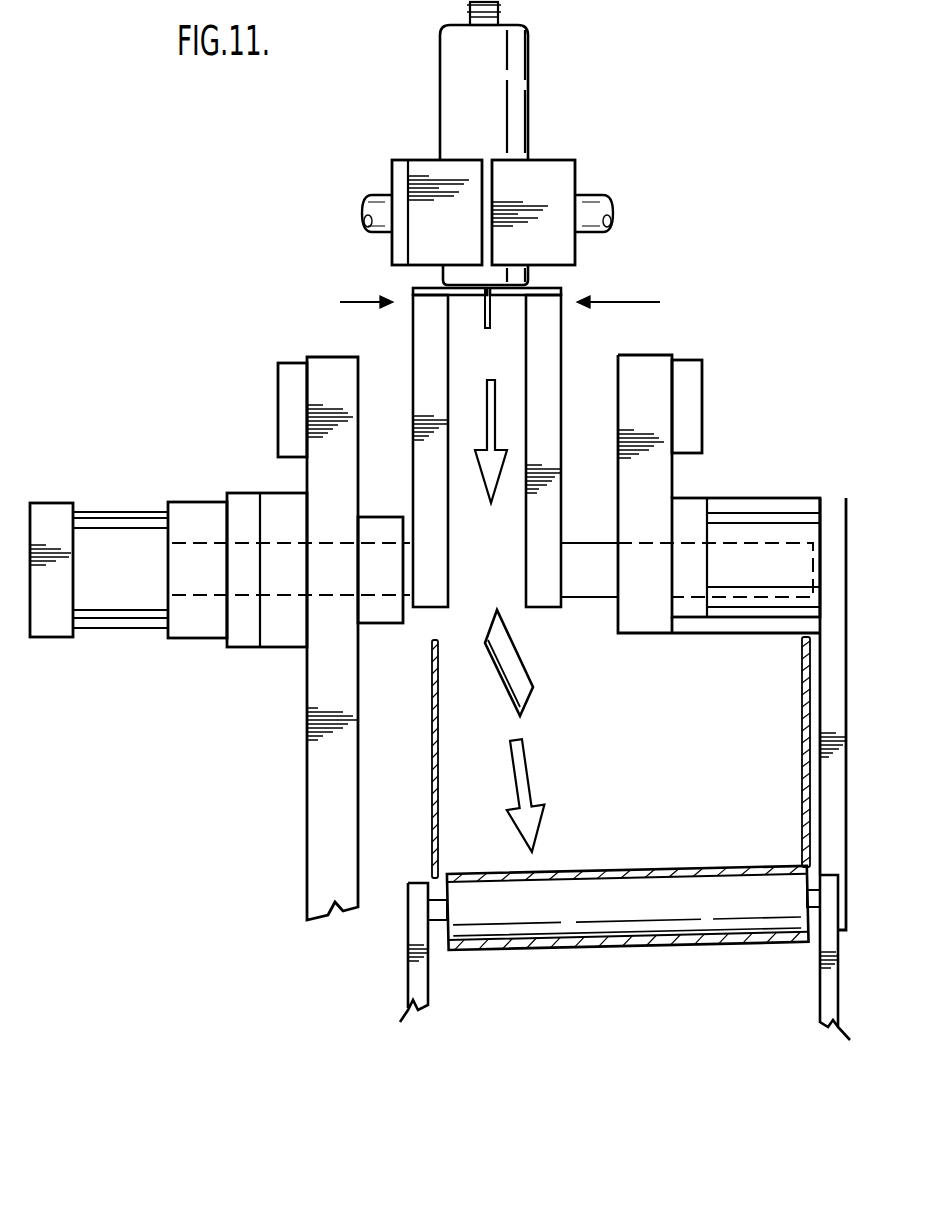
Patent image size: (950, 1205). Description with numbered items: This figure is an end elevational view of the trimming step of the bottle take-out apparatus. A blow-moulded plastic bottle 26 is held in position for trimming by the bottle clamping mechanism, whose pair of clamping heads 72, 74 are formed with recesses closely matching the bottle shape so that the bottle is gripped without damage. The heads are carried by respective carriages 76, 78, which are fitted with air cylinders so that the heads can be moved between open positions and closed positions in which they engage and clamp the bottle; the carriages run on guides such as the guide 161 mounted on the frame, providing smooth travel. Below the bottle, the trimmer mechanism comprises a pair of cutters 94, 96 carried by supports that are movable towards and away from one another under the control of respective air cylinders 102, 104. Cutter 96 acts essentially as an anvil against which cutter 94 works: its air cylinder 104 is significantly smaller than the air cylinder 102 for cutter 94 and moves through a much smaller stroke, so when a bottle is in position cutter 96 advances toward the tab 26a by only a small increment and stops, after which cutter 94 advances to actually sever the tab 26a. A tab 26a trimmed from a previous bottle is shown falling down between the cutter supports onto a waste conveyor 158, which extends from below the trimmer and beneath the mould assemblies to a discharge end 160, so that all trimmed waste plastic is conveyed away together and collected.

The bottle 26 is at (512, 57).
The tab 26a is at (487, 320).
The clamping head 72 is at (417, 152).
The clamping head 74 is at (553, 150).
The carriage 76 is at (413, 381).
The carriage 78 is at (561, 388).
The cutter 94 is at (433, 287).
The cutter 96 is at (547, 287).
The air cylinder 102 is at (125, 535).
The air cylinder 104 is at (768, 552).
The waste conveyor 158 is at (647, 870).
The discharge end 160 is at (690, 398).
The guide 161 is at (278, 409).